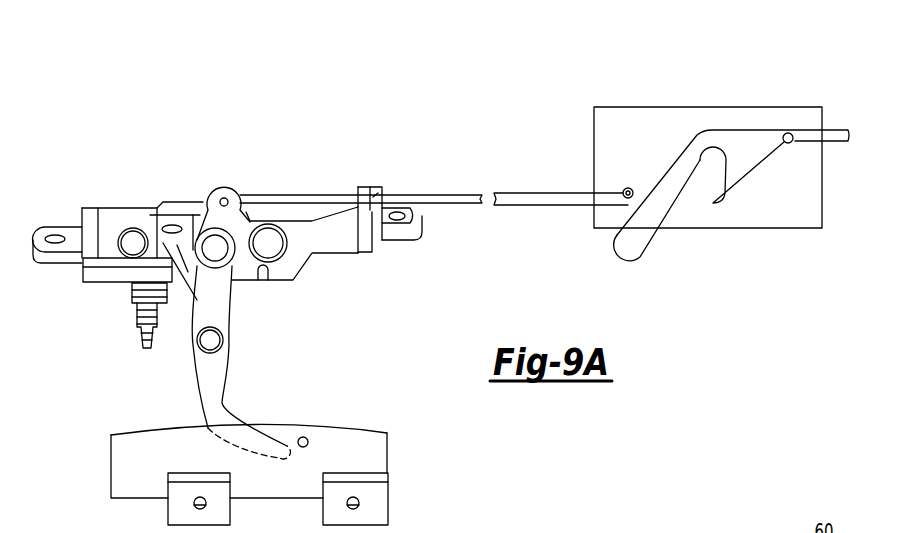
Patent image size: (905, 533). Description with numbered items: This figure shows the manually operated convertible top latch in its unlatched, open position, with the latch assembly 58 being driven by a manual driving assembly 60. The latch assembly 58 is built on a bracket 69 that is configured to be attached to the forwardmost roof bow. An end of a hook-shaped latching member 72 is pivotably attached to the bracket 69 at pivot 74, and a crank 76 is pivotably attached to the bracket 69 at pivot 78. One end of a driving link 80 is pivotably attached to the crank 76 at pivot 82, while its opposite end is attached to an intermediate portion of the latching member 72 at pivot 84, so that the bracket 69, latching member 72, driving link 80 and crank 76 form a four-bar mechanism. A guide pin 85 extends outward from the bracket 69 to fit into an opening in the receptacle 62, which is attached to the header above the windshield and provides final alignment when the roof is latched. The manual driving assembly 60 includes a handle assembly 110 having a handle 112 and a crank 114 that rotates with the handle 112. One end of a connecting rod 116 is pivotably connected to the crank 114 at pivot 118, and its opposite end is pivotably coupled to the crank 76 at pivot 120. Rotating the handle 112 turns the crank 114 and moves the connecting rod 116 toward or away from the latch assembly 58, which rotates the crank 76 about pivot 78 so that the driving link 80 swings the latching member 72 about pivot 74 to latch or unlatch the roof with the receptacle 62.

The latch assembly 58 is at (345, 322).
The manual driving assembly 60 is at (777, 81).
The receptacle 62 is at (370, 457).
The bracket 69 is at (104, 213).
The latching member 72 is at (217, 388).
The pivot 74 is at (133, 243).
The crank 76 is at (210, 203).
The pivot 78 is at (268, 243).
The driving link 80 is at (217, 290).
The pivot 82 is at (218, 247).
The pivot 84 is at (210, 340).
The guide pin 85 is at (142, 335).
The handle assembly 110 is at (700, 92).
The handle 112 is at (648, 235).
The crank 114 is at (760, 163).
The connecting rod 116 is at (552, 192).
The pivot 118 is at (628, 188).
The pivot 120 is at (227, 200).